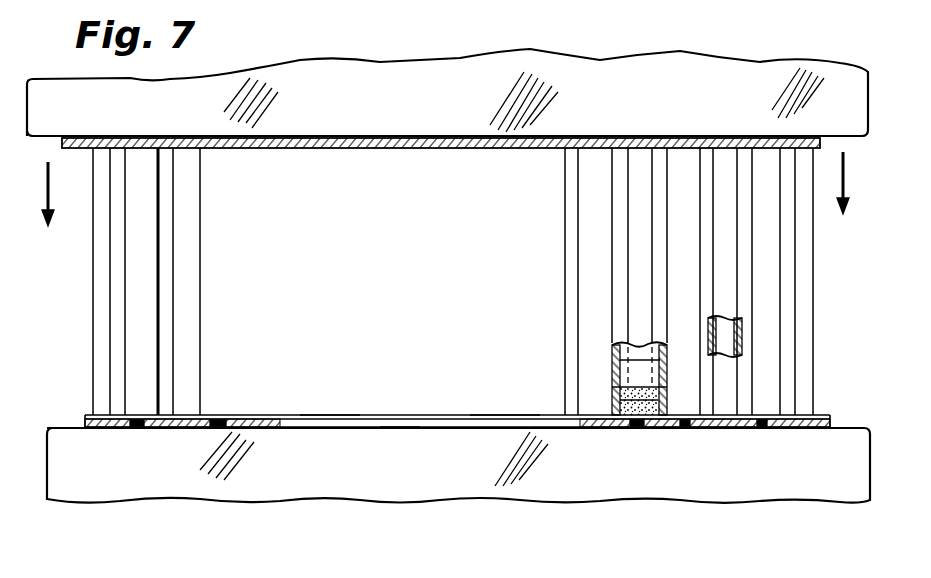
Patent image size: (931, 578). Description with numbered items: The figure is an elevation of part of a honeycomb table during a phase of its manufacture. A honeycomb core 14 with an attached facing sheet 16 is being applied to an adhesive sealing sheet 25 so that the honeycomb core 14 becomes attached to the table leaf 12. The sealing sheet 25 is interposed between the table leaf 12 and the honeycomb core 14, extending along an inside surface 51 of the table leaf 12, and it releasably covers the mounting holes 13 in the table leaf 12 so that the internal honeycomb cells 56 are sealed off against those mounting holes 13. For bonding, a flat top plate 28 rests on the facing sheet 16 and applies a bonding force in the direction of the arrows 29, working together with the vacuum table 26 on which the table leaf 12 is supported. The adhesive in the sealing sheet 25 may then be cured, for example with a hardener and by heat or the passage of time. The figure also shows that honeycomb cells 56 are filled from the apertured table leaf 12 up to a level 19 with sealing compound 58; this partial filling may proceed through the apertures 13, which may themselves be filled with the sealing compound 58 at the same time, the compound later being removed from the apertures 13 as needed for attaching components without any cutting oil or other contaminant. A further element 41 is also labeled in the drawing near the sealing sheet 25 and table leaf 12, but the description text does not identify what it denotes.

The flat plate 28 is at (53, 95).
The arrows 29 is at (843, 180).
The facing sheet 16 is at (346, 148).
The honeycomb core 14 is at (140, 284).
The table leaf 12 is at (336, 426).
The mounting holes 13 is at (135, 428).
The vacuum table 26 is at (100, 494).
The sealing sheet 25 is at (330, 415).
The inside surface 51 is at (398, 415).
The bonding layer 41 is at (507, 382).
The honeycomb cells 56 is at (642, 352).
The level 19 is at (637, 383).
The sealing compound 58 is at (622, 410).